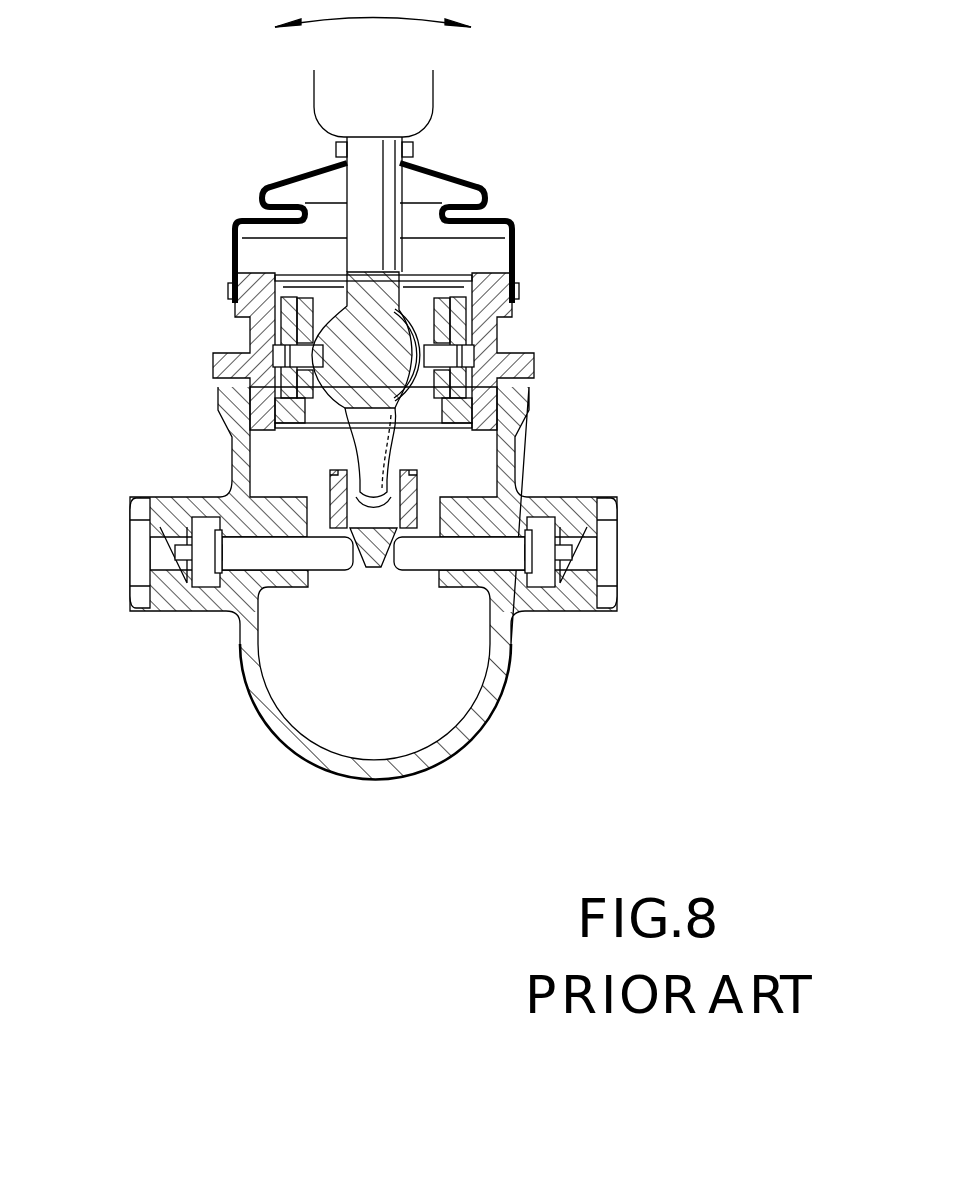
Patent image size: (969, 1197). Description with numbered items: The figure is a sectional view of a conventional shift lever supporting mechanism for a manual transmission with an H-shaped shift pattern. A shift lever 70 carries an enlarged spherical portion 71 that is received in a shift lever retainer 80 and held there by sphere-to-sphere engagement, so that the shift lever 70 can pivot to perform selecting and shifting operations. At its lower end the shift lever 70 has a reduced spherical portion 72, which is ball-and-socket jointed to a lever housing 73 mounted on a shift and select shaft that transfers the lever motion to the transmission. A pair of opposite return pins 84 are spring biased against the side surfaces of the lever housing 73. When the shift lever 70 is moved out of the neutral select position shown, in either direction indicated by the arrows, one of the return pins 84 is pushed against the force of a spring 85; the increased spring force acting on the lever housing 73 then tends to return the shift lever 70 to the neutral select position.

The shift lever 70 is at (383, 192).
The enlarged spherical portion 71 is at (382, 382).
The reduced spherical portion 72 is at (417, 500).
The lever housing 73 is at (330, 490).
The shift lever retainer 80 is at (488, 338).
The return pins 84 is at (332, 565).
The spring 85 is at (143, 545).